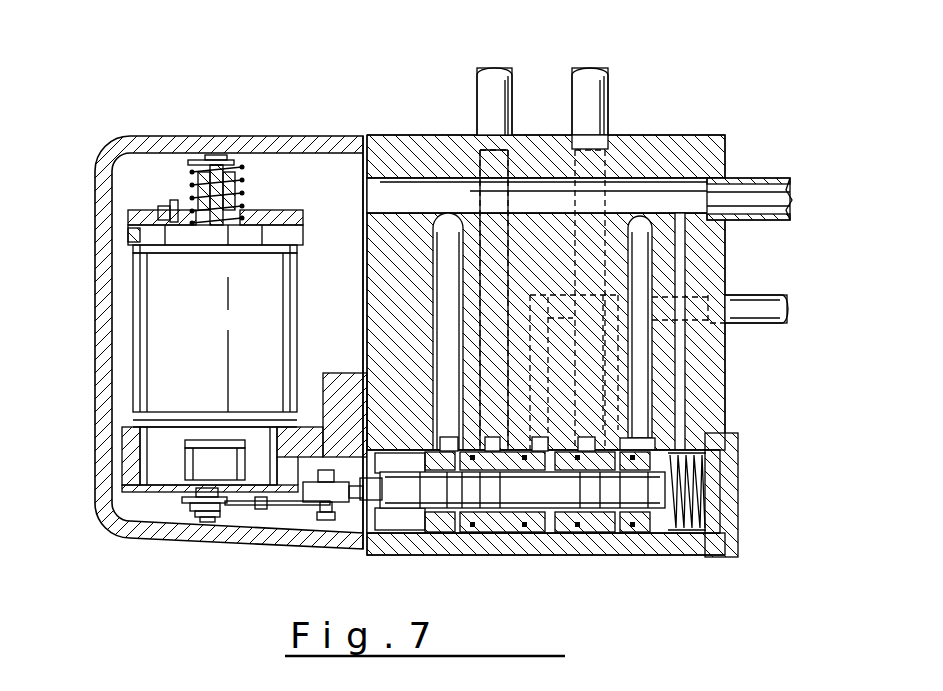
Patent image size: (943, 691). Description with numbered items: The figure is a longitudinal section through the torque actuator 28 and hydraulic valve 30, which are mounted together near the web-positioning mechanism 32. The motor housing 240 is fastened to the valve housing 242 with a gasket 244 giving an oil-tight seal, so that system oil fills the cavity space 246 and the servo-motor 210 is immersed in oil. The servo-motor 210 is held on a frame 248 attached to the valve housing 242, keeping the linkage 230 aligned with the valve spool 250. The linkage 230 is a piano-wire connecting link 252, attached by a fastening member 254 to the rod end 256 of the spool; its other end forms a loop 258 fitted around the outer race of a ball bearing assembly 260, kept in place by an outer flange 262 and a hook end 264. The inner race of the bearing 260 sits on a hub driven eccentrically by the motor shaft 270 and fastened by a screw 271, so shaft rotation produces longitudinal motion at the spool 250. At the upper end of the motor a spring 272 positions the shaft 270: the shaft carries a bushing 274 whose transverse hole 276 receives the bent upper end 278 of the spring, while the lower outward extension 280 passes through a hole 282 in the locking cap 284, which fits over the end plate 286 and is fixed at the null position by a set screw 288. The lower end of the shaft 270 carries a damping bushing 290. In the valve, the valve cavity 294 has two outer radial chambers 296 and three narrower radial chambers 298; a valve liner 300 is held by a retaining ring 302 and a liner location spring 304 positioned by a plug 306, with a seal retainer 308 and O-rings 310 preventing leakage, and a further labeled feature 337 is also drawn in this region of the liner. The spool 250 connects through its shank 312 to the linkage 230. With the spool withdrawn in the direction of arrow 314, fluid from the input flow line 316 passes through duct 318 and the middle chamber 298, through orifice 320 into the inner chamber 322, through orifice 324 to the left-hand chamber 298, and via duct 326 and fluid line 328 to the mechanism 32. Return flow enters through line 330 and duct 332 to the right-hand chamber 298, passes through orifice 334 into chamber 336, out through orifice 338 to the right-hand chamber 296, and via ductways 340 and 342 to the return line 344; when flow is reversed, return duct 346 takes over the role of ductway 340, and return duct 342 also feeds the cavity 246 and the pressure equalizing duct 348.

The torque actuator 28 is at (228, 92).
The hydraulic valve 30 is at (433, 82).
The web-positioning mechanism 32 is at (557, 42).
The servo-motor 210 is at (208, 327).
The linkage 230 is at (303, 537).
The motor housing 240 is at (95, 300).
The valve housing 242 is at (410, 140).
The gasket 244 is at (363, 140).
The cavity space 246 is at (313, 181).
The frame 248 is at (340, 378).
The valve spool 250 is at (455, 494).
The connecting link 252 is at (262, 510).
The fastening member 254 is at (310, 505).
The rod end 256 is at (333, 495).
The loop 258 is at (185, 502).
The ball bearing assembly 260 is at (200, 515).
The outer flange 262 is at (190, 508).
The hook end 264 is at (208, 520).
The motor shaft 270 is at (240, 174).
The screw 271 is at (215, 520).
The spring 272 is at (240, 201).
The bushing 274 is at (240, 188).
The transverse hole 276 is at (212, 155).
The upper end 278 is at (225, 160).
The outward extension 280 is at (178, 208).
The hole 282 is at (164, 215).
The locking cap 284 is at (128, 217).
The end plate 286 is at (300, 238).
The set screw 288 is at (128, 235).
The damping bushing 290 is at (232, 460).
The valve cavity 294 is at (700, 452).
The outer radial chambers 296 is at (428, 452).
The radial chambers 298 is at (484, 566).
The valve liner 300 is at (425, 463).
The retaining ring 302 is at (425, 526).
The liner location spring 304 is at (700, 490).
The plug 306 is at (735, 462).
The seal retainer 308 is at (680, 540).
The O-rings 310 is at (520, 535).
The shank 312 is at (425, 455).
The arrow 314 is at (505, 489).
The input flow line 316 is at (750, 305).
The duct 318 is at (560, 292).
The orifice 320 is at (540, 533).
The inner chamber 322 is at (525, 535).
The orifice 324 is at (510, 462).
The duct 326 is at (500, 256).
The fluid line 328 is at (478, 103).
The line 330 is at (572, 103).
The duct 332 is at (582, 262).
The orifice 334 is at (608, 458).
The chamber 336 is at (598, 535).
The port 337 is at (455, 460).
The orifice 338 is at (610, 535).
The ductway 340 is at (645, 262).
The return duct 342 is at (527, 207).
The return line 344 is at (758, 180).
The return duct 346 is at (440, 239).
The pressure equalizing duct 348 is at (683, 275).